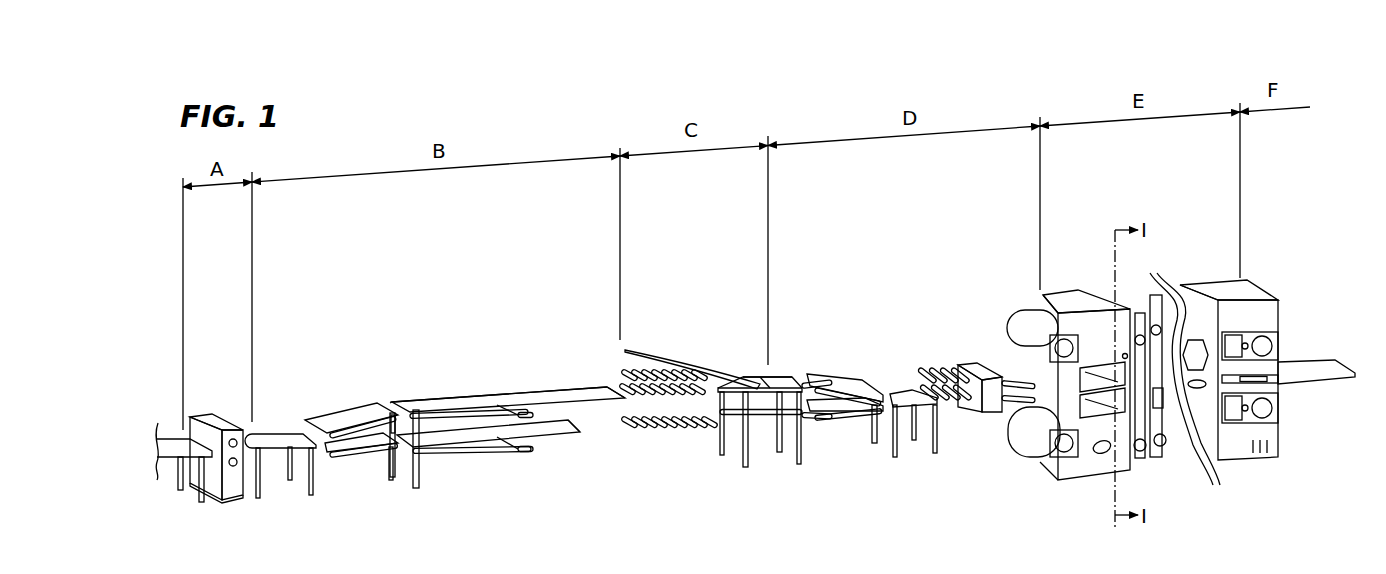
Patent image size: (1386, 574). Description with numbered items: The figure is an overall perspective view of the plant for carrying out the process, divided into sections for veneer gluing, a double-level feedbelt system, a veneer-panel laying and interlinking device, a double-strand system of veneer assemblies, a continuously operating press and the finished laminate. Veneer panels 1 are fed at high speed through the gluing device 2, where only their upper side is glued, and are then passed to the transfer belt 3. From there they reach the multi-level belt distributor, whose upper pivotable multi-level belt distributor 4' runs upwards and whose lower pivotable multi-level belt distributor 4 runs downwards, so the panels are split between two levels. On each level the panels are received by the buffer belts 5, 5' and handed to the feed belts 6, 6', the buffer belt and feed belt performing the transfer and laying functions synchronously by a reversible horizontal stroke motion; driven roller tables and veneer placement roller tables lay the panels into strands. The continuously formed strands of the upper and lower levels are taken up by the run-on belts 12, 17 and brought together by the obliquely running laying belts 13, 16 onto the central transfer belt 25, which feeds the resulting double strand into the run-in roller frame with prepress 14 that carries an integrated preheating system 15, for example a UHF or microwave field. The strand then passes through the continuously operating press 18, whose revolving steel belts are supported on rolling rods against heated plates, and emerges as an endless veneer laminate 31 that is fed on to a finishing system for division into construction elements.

The veneer panels 1 is at (168, 452).
The gluing device 2 is at (230, 488).
The transfer belt 3 is at (275, 442).
The upper pivotable multi-level belt distributor 4' is at (351, 474).
The lower pivotable multi-level belt distributor 4 is at (361, 489).
The buffer belt 5 is at (507, 466).
The buffer belt 5' is at (498, 466).
The feed belt 6 is at (585, 482).
The feed belt 6' is at (622, 464).
The run-on belt 17 is at (732, 420).
The run-on belt 12 is at (788, 380).
The laying belt 16 is at (833, 406).
The laying belt 13 is at (850, 384).
The central transfer belt 25 is at (903, 398).
The run-in roller frame with prepress 14 is at (958, 404).
The preheating system 15 is at (992, 402).
The continuously operating press 18 is at (1167, 472).
The veneer laminate 31 is at (1323, 376).